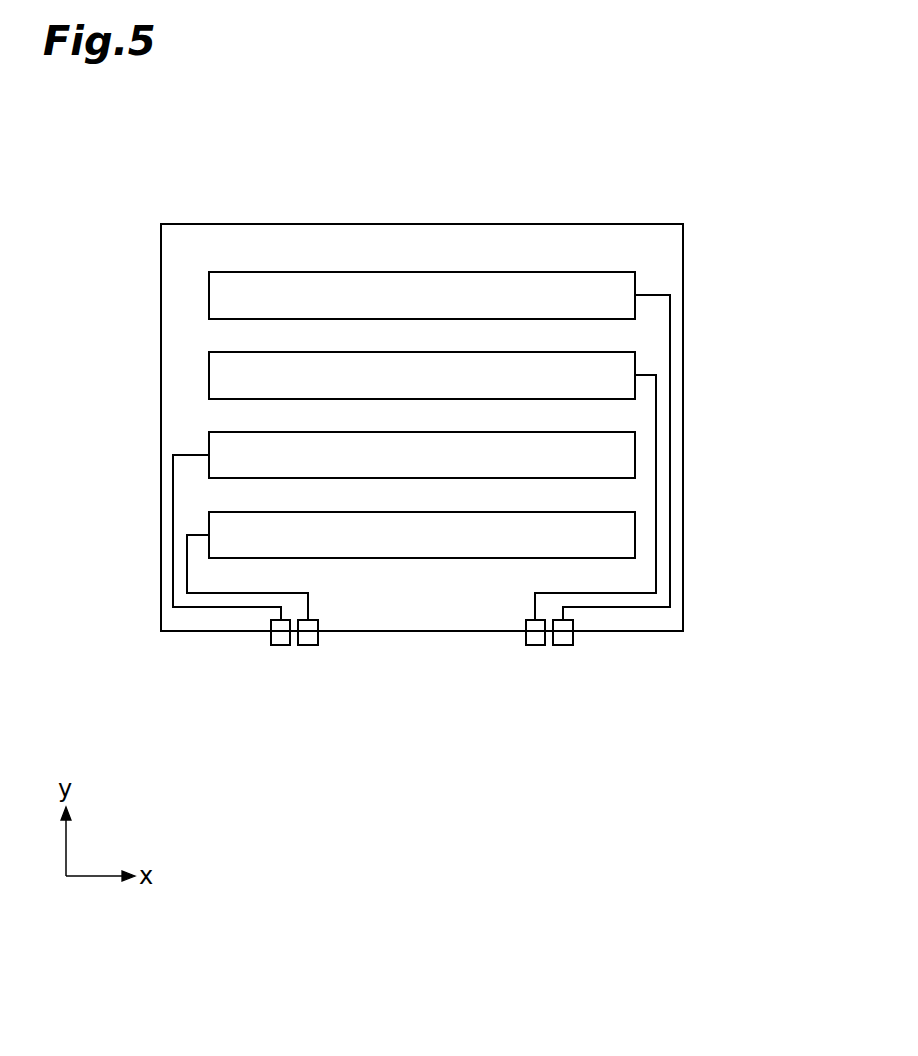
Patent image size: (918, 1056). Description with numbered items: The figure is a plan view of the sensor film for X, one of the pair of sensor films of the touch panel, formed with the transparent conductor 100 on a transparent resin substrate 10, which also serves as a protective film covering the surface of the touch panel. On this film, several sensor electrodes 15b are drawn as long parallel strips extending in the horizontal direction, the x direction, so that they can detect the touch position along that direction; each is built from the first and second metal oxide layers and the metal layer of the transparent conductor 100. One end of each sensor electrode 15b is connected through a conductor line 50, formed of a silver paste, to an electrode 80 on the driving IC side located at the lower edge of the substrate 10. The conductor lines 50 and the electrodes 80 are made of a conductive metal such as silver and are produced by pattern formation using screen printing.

The transparent conductor 100 is at (458, 422).
The transparent resin substrate 10 is at (668, 256).
The sensor electrodes 15b is at (489, 283).
The conductor line 50 is at (672, 590).
The electrode 80 is at (562, 637).